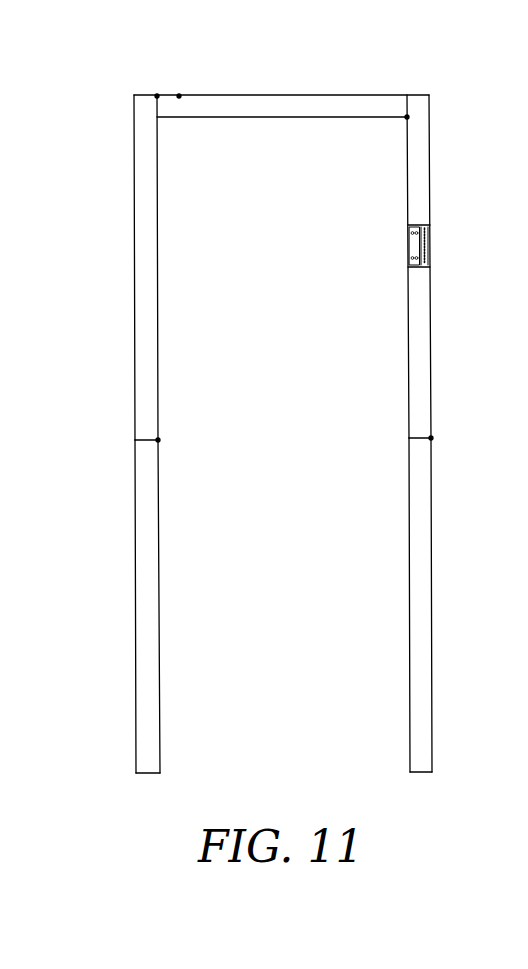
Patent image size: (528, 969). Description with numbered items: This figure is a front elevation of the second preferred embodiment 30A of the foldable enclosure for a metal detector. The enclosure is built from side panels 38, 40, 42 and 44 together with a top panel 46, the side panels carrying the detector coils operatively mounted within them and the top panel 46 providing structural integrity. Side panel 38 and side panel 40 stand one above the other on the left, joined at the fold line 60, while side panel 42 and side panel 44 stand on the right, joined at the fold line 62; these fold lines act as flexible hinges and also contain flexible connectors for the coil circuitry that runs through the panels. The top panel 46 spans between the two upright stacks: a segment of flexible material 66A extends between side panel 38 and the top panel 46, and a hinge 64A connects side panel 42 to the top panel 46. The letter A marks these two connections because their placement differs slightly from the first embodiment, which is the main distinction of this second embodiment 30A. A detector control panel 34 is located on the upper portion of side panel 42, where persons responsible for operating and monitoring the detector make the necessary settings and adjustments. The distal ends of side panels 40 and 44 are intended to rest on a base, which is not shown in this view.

The second preferred embodiment of the foldable enclosure 30A is at (280, 386).
The detector control panel 34 is at (430, 226).
The side panel 38 is at (143, 256).
The side panel 40 is at (143, 589).
The side panel 42 is at (425, 184).
The side panel 44 is at (425, 648).
The top panel 46 is at (268, 95).
The fold line 60 is at (158, 440).
The fold line 62 is at (431, 438).
The hinge 64A is at (405, 118).
The segment of flexible material 66A is at (158, 95).